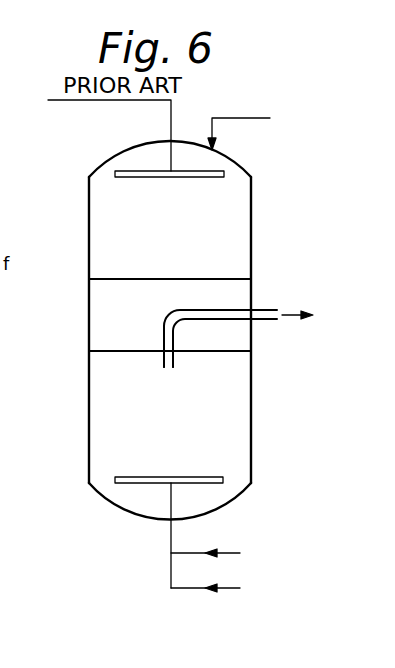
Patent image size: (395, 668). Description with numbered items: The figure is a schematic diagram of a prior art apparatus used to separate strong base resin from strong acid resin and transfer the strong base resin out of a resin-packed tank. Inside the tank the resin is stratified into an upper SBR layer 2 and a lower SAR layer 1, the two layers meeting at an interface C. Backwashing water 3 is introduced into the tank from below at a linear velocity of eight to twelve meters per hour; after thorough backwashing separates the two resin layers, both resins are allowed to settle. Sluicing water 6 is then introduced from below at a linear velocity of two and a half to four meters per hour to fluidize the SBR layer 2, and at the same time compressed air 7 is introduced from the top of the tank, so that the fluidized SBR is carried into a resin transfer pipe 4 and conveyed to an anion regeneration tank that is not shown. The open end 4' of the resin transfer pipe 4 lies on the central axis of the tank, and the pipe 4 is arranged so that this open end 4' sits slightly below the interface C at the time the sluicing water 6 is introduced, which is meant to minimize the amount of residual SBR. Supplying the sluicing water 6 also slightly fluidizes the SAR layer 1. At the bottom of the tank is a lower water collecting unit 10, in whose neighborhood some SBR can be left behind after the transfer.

The SAR layer 1 is at (131, 440).
The SBR layer 2 is at (137, 320).
The backwashing water 3 is at (237, 552).
The resin transfer pipe 4 is at (238, 311).
The open end of resin transfer pipe 4' is at (227, 375).
The sluicing water 6 is at (233, 590).
The compressed air 7 is at (250, 118).
The lower water collecting unit 10 is at (113, 478).
The interface C is at (117, 350).